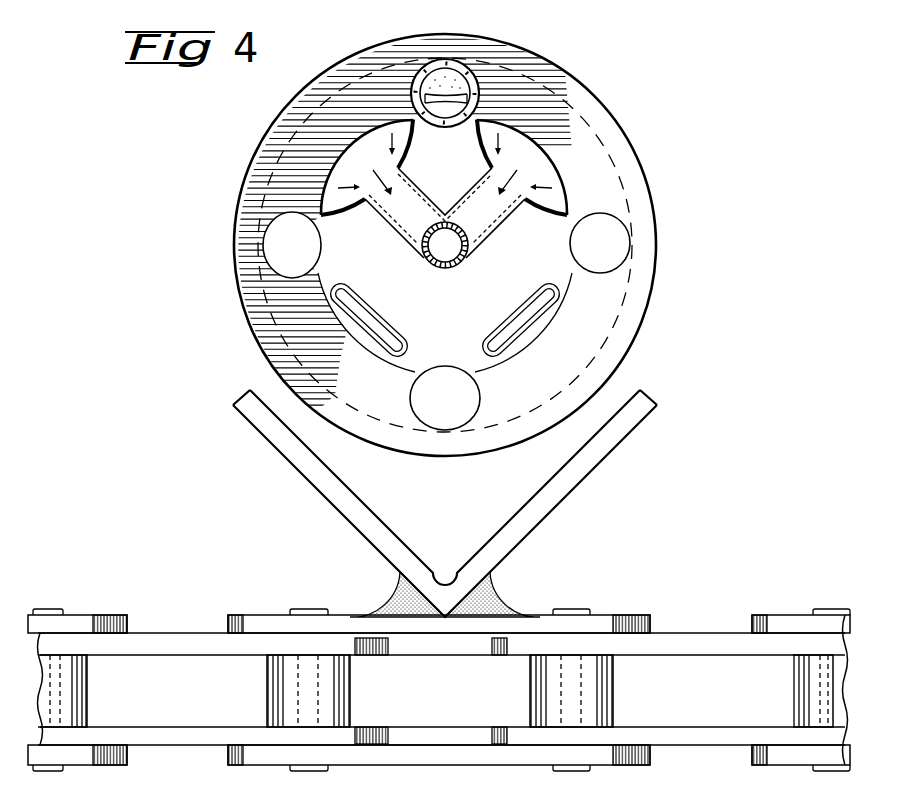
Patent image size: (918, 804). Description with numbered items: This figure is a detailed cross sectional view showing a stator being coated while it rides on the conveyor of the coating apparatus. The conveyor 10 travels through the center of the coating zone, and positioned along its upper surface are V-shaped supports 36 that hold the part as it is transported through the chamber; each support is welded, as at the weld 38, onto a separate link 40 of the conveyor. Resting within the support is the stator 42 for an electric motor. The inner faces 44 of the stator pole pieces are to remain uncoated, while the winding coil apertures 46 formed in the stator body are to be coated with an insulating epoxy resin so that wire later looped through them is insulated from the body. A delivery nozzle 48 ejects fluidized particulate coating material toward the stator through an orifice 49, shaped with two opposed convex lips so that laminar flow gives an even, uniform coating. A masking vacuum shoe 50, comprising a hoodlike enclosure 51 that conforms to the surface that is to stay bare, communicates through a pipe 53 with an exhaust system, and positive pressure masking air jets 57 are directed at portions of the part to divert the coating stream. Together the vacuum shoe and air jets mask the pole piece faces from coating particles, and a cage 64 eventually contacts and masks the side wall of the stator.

The conveyor 10 is at (147, 605).
The V-shaped support 36 is at (285, 452).
The weld 38 is at (397, 594).
The link 40 is at (616, 630).
The stator 42 is at (307, 150).
The inner faces of the pole pieces 44 is at (547, 170).
The winding coil apertures 46 is at (478, 82).
The delivery nozzle 48 is at (437, 78).
The orifice 49 is at (441, 100).
The masking vacuum shoe 50 is at (465, 264).
The hoodlike enclosure 51 is at (345, 215).
The pipe 53 is at (439, 230).
The masking air jet 57 is at (364, 307).
The cage 64 is at (596, 104).